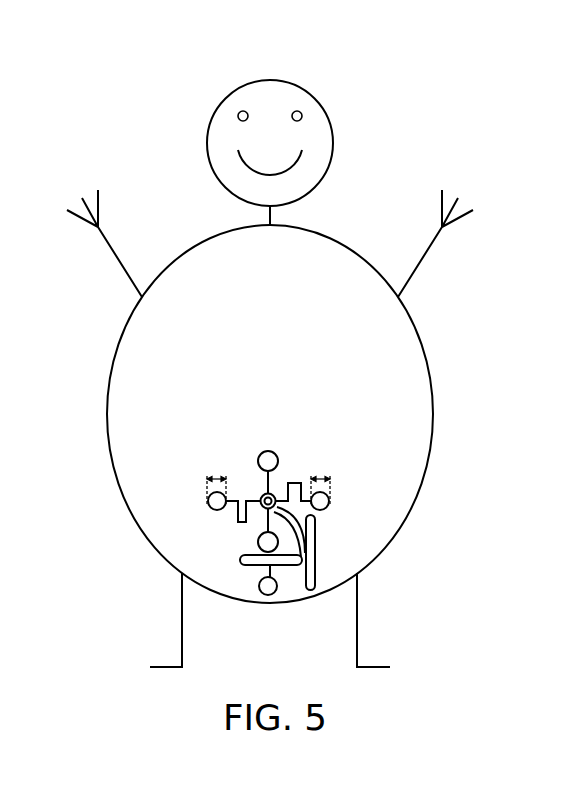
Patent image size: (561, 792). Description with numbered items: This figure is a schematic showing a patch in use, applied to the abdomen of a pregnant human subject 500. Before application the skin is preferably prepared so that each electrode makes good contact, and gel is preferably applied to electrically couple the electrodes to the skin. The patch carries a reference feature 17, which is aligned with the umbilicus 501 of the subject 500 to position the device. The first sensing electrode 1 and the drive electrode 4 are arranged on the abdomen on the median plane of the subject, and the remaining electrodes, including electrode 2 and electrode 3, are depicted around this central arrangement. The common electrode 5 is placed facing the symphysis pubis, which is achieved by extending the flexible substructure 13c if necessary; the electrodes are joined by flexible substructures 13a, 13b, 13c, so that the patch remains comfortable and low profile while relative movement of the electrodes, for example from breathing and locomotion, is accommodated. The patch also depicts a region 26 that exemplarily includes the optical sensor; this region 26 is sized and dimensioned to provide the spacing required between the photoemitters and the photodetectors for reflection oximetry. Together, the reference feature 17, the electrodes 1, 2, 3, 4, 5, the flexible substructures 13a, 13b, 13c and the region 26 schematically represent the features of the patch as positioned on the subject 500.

The pregnant human subject 500 is at (156, 88).
The umbilicus 501 is at (262, 497).
The reference feature 17 is at (265, 494).
The electrode 2 is at (267, 450).
The drive electrode 4 is at (258, 542).
The electrode 3 is at (207, 492).
The first sensing electrode 1 is at (330, 495).
The flexible substructure 13a is at (298, 483).
The flexible substructure 13b is at (238, 516).
The flexible substructure 13c is at (240, 558).
The region 26 is at (313, 557).
The common electrode 5 is at (270, 596).